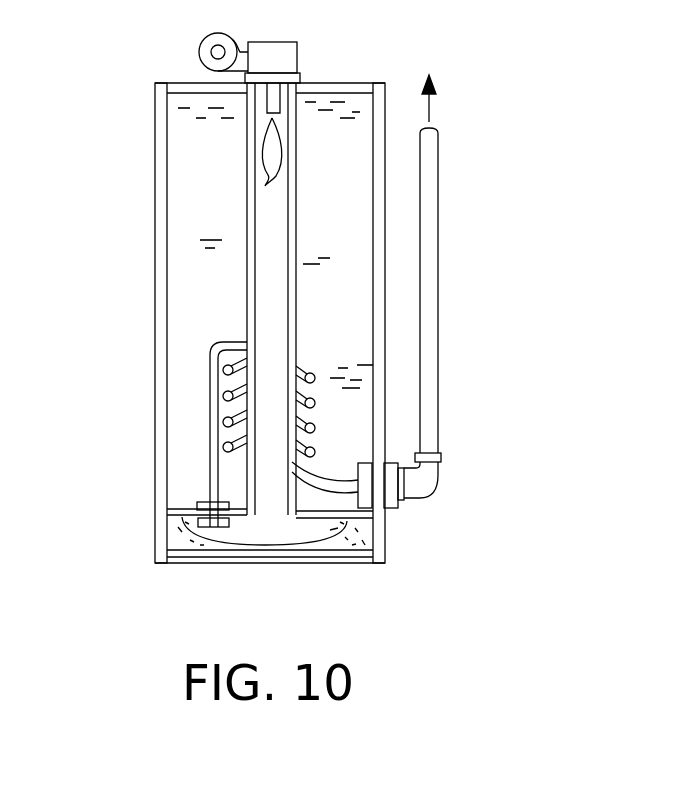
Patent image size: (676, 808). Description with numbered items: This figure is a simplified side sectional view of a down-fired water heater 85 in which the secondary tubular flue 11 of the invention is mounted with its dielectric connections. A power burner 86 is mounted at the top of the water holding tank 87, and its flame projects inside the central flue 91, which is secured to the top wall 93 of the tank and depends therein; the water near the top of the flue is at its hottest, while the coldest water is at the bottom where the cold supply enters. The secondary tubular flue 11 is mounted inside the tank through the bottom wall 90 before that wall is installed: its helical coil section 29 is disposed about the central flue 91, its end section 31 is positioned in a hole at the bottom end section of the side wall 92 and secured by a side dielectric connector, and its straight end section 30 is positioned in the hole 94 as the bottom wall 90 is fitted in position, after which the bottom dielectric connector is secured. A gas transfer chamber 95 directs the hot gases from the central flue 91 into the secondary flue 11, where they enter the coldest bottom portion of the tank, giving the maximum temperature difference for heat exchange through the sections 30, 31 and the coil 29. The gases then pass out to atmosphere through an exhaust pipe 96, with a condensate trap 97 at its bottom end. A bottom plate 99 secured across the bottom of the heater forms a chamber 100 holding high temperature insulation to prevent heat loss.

The down-fired water heater 85 is at (280, 345).
The power burner 86 is at (270, 53).
The water holding tank 87 is at (157, 153).
The bottom wall 90 is at (350, 520).
The central flue 91 is at (292, 237).
The side wall 92 is at (388, 445).
The top wall 93 is at (182, 83).
The hole 94 is at (232, 520).
The gas transfer chamber 95 is at (287, 553).
The exhaust pipe 96 is at (430, 197).
The condensate trap 97 is at (402, 503).
The bottom plate 99 is at (360, 560).
The chamber 100 is at (170, 538).
The secondary tubular flue 11 is at (307, 357).
The helical coil section 29 is at (338, 409).
The end section 30 is at (215, 412).
The end section 31 is at (327, 485).